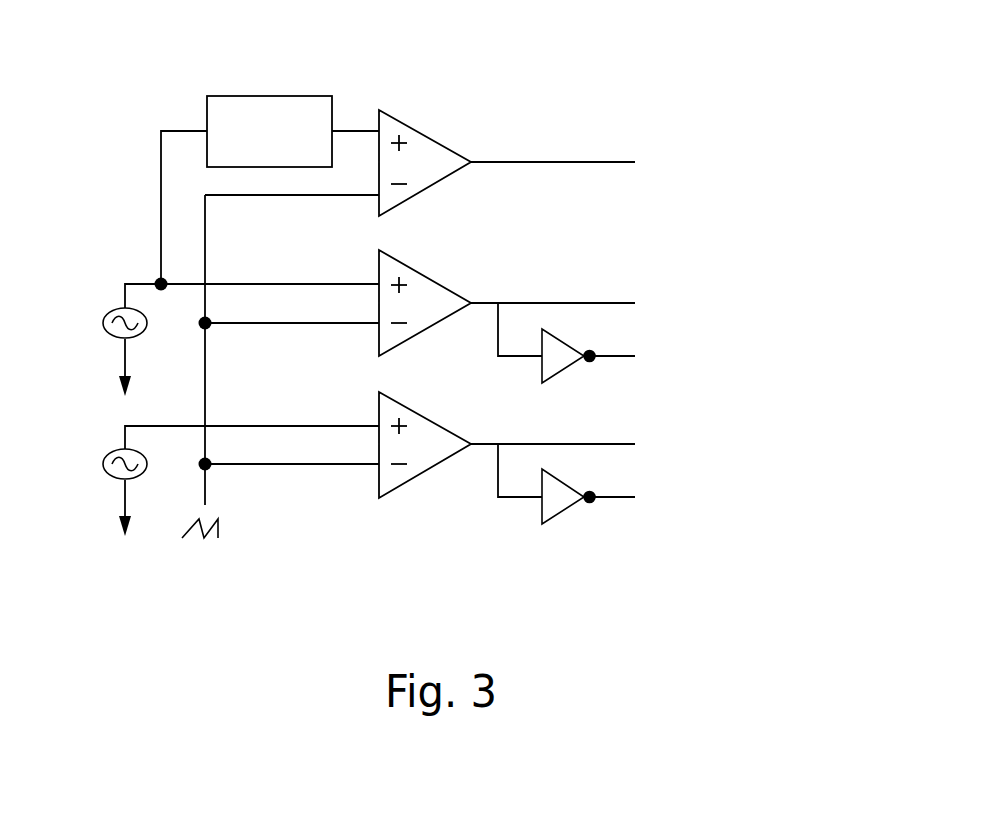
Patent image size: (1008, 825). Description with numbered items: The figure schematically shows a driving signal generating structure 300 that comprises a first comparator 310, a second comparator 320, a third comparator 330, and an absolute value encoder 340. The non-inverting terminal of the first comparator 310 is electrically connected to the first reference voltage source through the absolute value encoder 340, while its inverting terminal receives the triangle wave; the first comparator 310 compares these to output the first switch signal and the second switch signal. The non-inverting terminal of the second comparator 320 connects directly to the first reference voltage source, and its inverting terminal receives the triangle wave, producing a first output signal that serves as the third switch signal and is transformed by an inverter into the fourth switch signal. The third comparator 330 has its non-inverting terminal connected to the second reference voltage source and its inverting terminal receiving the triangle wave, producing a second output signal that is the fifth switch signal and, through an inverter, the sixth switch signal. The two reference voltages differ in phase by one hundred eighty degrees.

The driving signal generating structure 300 is at (757, 595).
The first comparator 310 is at (423, 154).
The second comparator 320 is at (423, 295).
The third comparator 330 is at (423, 437).
The absolute value encoder 340 is at (270, 96).